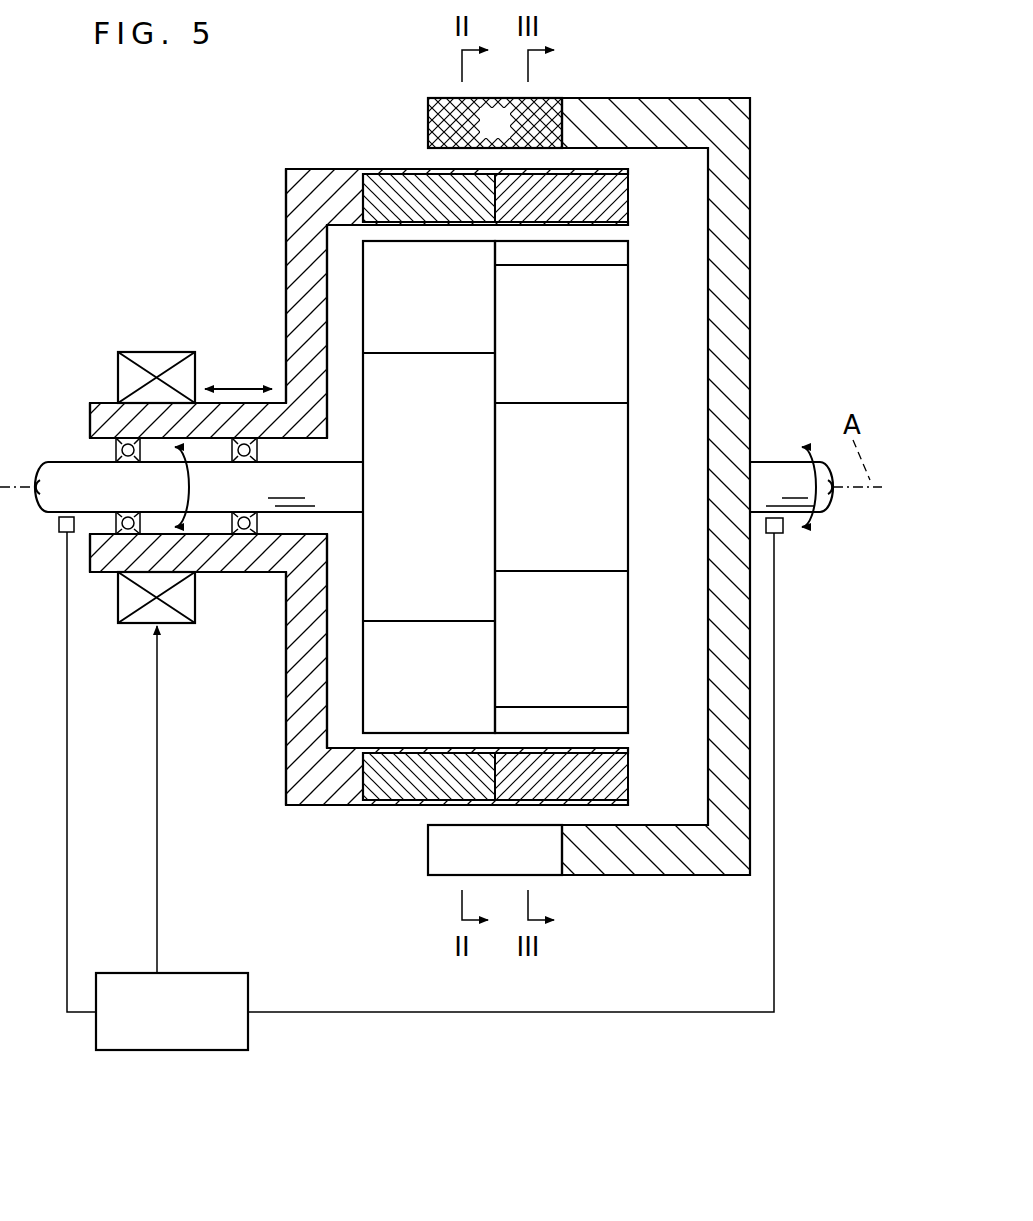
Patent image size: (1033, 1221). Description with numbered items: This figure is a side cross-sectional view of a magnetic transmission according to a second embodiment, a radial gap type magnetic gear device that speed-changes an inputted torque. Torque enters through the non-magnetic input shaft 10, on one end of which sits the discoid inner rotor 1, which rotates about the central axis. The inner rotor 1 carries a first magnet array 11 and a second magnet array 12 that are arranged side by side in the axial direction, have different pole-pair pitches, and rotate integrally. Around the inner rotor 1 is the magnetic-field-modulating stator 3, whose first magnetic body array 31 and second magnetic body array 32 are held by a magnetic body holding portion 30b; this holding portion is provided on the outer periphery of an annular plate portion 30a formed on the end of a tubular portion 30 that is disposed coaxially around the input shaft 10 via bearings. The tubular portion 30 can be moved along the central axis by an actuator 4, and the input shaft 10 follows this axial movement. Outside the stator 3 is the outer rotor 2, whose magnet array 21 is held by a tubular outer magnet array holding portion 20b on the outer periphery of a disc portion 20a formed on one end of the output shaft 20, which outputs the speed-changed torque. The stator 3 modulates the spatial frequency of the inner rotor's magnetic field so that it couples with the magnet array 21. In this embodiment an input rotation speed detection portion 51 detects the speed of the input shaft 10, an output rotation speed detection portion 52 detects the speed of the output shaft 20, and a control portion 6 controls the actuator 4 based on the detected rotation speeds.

The inner rotor 1 is at (518, 468).
The outer rotor 2 is at (602, 444).
The magnetic-field-modulating stator 3 is at (452, 501).
The actuator 4 is at (157, 352).
The control portion 6 is at (212, 972).
The input shaft 10 is at (53, 462).
The first magnet array 11 is at (360, 300).
The second magnet array 12 is at (627, 295).
The output shaft 20 is at (778, 462).
The disc portion 20a is at (740, 700).
The outer magnet array holding portion 20b is at (622, 98).
The magnet array 21 is at (428, 120).
The tubular portion 30 is at (250, 568).
The annular plate portion 30a is at (297, 690).
The magnetic body holding portion 30b is at (342, 800).
The first magnetic body array 31 is at (390, 183).
The second magnetic body array 32 is at (627, 196).
The input rotation speed detection portion 51 is at (58, 528).
The output rotation speed detection portion 52 is at (786, 533).